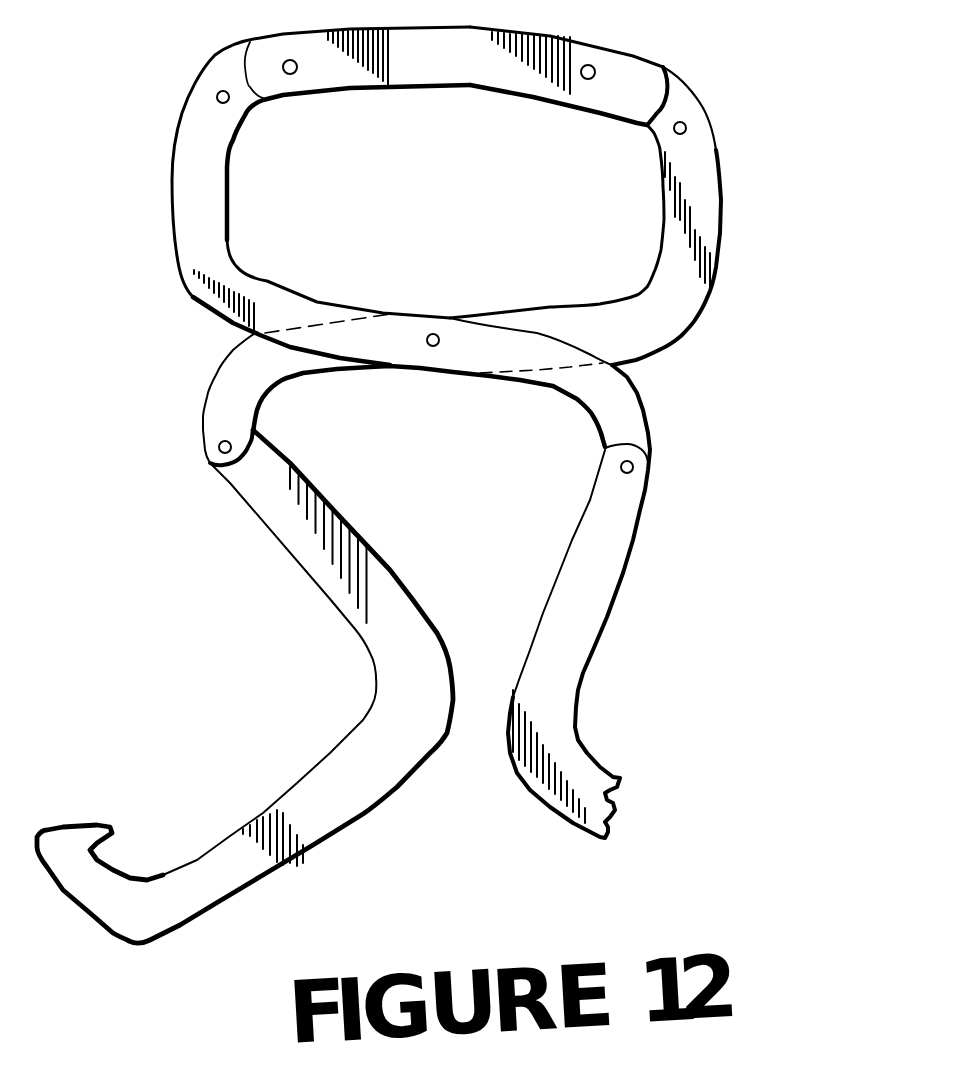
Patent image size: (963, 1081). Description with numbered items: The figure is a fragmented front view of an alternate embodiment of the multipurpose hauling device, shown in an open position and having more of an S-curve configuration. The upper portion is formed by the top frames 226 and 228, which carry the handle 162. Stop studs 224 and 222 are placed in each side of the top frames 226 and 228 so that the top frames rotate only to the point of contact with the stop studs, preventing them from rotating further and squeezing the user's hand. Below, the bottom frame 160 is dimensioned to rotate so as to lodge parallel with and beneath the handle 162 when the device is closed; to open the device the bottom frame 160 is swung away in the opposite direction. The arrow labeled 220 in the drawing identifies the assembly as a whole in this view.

The bottom frame 160 is at (327, 788).
The handle 162 is at (630, 68).
The retractor assembly 220 is at (750, 386).
The stop stud 222 is at (684, 122).
The stop stud 224 is at (217, 95).
The top frame 226 is at (703, 228).
The top frame 228 is at (184, 215).